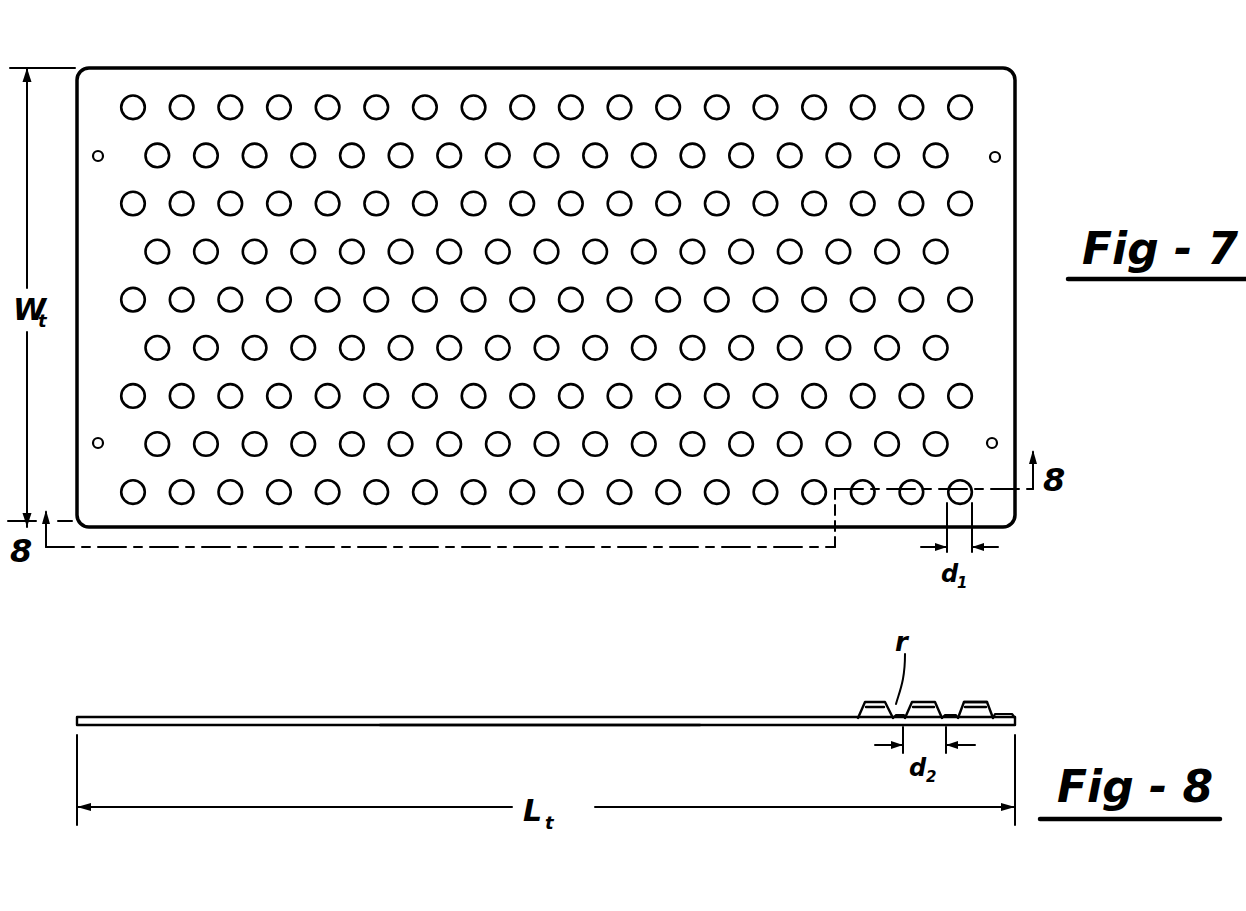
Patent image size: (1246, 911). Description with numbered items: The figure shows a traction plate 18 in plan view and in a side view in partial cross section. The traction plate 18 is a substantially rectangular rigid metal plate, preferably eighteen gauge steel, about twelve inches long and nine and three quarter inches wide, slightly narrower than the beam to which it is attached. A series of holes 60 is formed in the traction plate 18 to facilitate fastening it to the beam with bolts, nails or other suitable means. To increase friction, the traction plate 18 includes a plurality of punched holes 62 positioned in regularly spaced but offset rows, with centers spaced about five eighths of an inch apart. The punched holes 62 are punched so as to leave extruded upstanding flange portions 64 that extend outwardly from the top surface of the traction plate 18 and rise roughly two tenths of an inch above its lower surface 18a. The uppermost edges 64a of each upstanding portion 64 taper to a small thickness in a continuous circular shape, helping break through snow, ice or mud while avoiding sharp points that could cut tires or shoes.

In FIG. 7, the traction plate 18 is at (1034, 86).
In FIG. 8, the traction plate 18 is at (203, 697).
In FIG. 8, the lower surface of plate 18a is at (375, 727).
In FIG. 7, the holes 60 is at (995, 163).
In FIG. 8, the holes 60 is at (1000, 713).
In FIG. 7, the punched holes 62 is at (912, 110).
In FIG. 8, the punched holes 62 is at (877, 702).
In FIG. 8, the upstanding flange portions 64 is at (860, 714).
In FIG. 8, the uppermost edges 64a is at (987, 702).